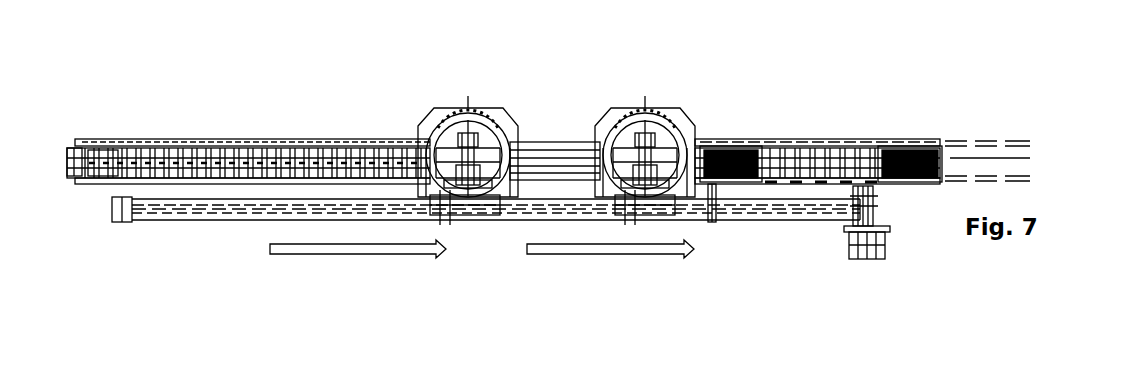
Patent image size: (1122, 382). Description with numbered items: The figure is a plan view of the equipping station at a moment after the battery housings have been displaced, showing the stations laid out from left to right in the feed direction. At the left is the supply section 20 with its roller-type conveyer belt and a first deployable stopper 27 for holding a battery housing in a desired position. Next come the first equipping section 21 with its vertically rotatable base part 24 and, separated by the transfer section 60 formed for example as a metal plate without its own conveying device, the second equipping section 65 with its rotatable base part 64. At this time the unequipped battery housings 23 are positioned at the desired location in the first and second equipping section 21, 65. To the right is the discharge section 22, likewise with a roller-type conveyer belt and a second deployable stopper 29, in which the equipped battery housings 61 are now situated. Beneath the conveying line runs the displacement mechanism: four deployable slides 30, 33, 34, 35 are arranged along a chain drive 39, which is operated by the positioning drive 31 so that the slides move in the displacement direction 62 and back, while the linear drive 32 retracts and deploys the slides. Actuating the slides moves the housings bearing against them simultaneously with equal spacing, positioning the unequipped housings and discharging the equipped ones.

The supply section 20 is at (262, 116).
The first equipping section 21 is at (487, 122).
The discharge section 22 is at (802, 114).
The unequipped battery housing 23 is at (118, 183).
The base part 24 is at (428, 136).
The first deployable stopper 27 is at (225, 141).
The second deployable stopper 29 is at (830, 142).
The deployable slide 30 is at (438, 224).
The positioning drive 31 is at (866, 259).
The linear drive 32 is at (884, 252).
The deployable slide 33 is at (625, 200).
The deployable slide 34 is at (714, 222).
The deployable slide 35 is at (882, 143).
The chain drive 39 is at (785, 220).
The transfer section 60 is at (553, 138).
The equipped battery housing 61 is at (728, 185).
The displacement direction 62 is at (341, 254).
The base part 64 is at (620, 128).
The second equipping section 65 is at (671, 122).